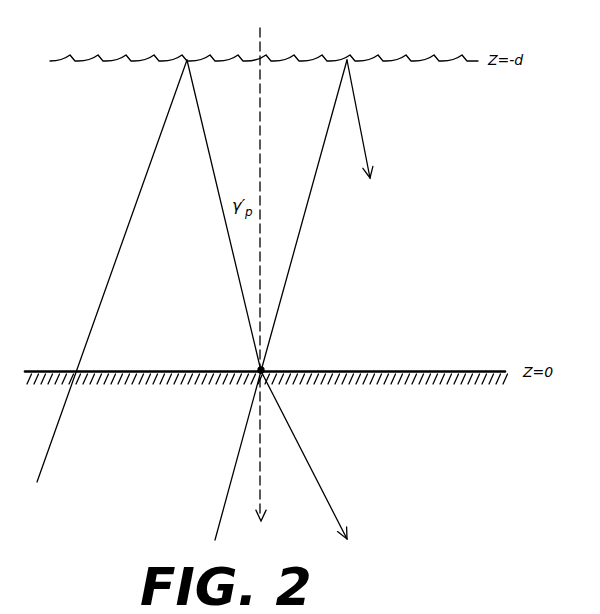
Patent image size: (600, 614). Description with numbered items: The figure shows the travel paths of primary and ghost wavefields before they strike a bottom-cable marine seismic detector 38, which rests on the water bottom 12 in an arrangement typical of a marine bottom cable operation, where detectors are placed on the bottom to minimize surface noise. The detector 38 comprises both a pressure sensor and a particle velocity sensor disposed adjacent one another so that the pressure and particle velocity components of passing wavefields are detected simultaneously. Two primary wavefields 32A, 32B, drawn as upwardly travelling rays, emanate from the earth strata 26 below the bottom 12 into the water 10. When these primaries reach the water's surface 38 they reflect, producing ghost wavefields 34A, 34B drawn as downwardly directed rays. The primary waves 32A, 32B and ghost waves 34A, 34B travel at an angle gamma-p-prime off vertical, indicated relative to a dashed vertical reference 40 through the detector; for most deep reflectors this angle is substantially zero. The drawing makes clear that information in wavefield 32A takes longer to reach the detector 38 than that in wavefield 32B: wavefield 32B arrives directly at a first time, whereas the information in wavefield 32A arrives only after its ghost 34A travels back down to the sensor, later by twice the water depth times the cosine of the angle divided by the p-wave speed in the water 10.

The water 10 is at (472, 160).
The water bottom 12 is at (365, 370).
The earth strata 26 is at (428, 415).
The primary wavefield 32A is at (52, 440).
The primary wavefield 32B is at (229, 487).
The ghost wavefield 34A is at (200, 108).
The ghost wavefield 34B is at (360, 125).
The marine seismic detector 38 is at (387, 58).
The vertical reference axis 40 is at (262, 33).